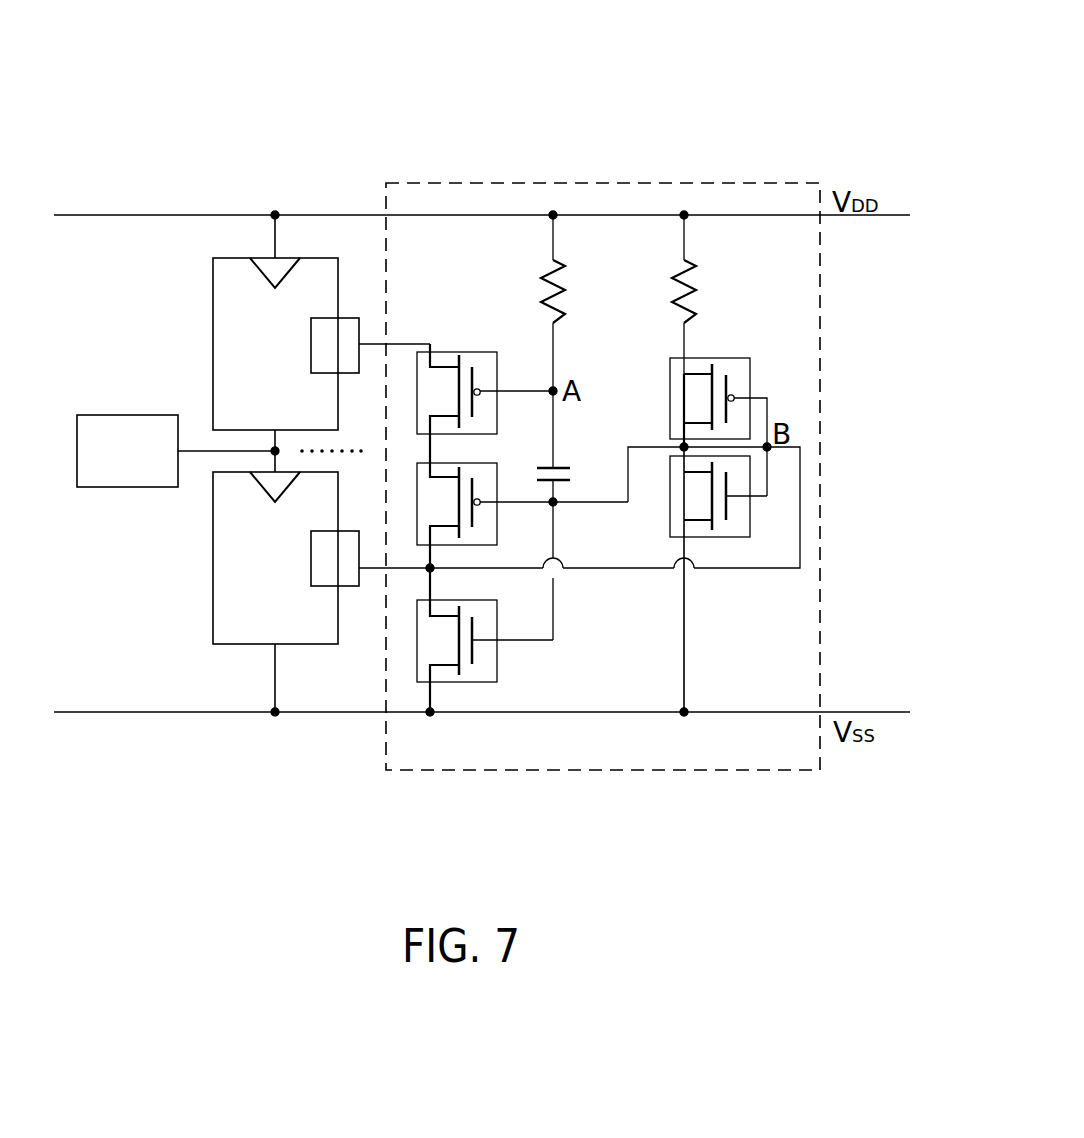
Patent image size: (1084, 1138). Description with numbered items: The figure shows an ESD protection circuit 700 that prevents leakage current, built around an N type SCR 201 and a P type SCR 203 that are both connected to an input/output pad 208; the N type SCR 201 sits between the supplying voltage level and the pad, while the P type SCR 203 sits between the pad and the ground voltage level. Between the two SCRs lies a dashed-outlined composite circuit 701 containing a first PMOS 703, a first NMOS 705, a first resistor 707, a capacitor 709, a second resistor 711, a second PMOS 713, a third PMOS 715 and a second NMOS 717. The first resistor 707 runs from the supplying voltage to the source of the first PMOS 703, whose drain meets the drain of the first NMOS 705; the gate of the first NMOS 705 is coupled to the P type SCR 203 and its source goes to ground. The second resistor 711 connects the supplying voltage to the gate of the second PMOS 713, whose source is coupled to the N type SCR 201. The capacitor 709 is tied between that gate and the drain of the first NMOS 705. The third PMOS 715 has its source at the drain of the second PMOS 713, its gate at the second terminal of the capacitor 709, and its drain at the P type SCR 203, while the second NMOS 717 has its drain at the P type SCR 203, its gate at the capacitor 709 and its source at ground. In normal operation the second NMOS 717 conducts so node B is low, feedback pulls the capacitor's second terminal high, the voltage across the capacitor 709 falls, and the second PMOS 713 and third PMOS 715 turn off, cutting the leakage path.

The ESD protection circuit 700 is at (722, 114).
The composite circuit 701 is at (820, 385).
The N type SCR 201 is at (213, 292).
The P type SCR 203 is at (213, 594).
The input/output pad 208 is at (126, 415).
The first PMOS 703 is at (670, 372).
The first NMOS 705 is at (670, 528).
The first resistor 707 is at (686, 291).
The capacitor 709 is at (558, 465).
The second resistor 711 is at (556, 291).
The second PMOS 713 is at (459, 352).
The third PMOS 715 is at (497, 478).
The second NMOS 717 is at (497, 657).